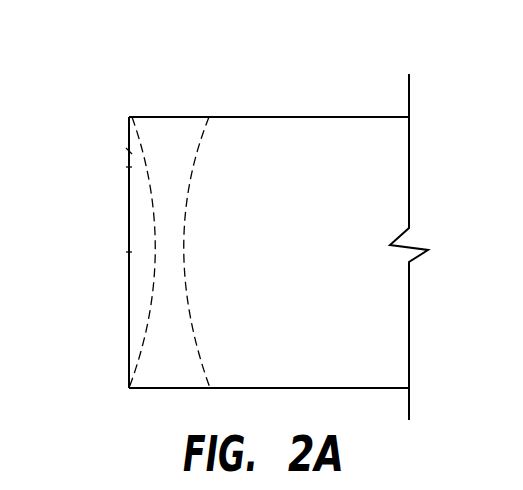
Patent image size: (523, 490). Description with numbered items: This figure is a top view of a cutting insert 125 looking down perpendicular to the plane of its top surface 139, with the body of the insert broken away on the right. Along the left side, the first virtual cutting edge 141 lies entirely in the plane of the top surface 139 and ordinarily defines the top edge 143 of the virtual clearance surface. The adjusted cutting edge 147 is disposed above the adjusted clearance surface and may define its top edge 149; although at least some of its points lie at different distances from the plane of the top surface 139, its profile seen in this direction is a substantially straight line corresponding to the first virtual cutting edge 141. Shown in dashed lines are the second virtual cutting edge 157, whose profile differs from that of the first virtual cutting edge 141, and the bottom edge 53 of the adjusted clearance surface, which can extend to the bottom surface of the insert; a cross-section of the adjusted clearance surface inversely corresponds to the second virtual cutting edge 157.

The insert 125 is at (283, 80).
The top surface 139 is at (380, 154).
The adjusted cutting edge 147 is at (120, 212).
The second virtual cutting edge 157 is at (140, 150).
The bottom edge 53 is at (185, 247).
The top edge 143 is at (131, 152).
The first virtual cutting edge 141 is at (128, 167).
The top edge 149 is at (128, 252).